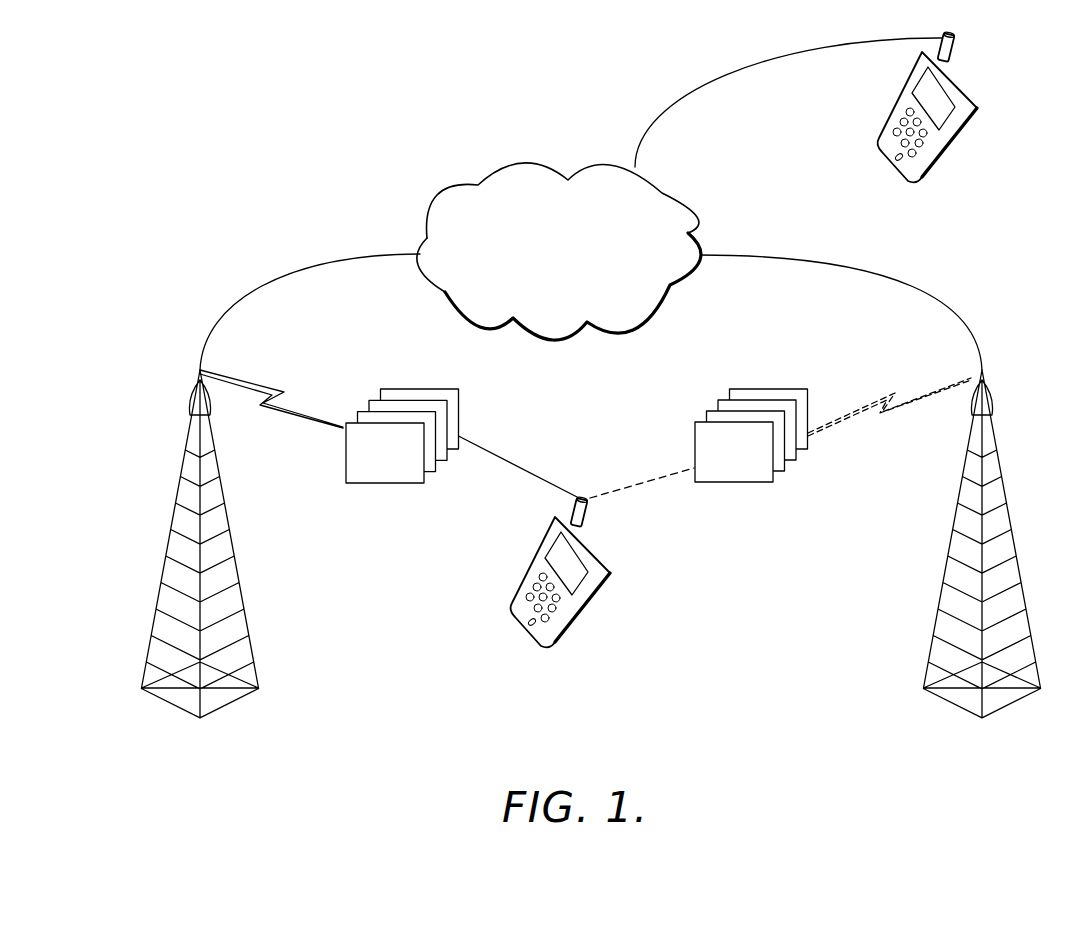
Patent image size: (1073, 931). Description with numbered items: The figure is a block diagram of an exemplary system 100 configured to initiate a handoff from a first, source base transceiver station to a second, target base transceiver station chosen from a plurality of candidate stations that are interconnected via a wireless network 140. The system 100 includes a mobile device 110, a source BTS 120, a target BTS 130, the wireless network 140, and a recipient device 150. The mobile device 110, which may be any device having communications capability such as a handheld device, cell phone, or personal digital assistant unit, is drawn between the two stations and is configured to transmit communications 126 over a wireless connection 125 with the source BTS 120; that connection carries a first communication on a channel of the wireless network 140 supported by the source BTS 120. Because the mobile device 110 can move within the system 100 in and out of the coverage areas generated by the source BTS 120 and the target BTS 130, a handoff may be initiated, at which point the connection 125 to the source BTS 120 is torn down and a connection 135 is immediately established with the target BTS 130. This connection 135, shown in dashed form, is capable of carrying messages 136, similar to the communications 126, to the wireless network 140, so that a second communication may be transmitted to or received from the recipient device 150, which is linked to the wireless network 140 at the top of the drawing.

The system 100 is at (240, 173).
The mobile device 110 is at (598, 603).
The source BTS 120 is at (174, 505).
The wireless connection 125 is at (257, 386).
The communications 126 is at (423, 389).
The target BTS 130 is at (1009, 524).
The connection 135 is at (896, 392).
The messages 136 is at (780, 389).
The wireless network 140 is at (575, 286).
The recipient device 150 is at (965, 142).